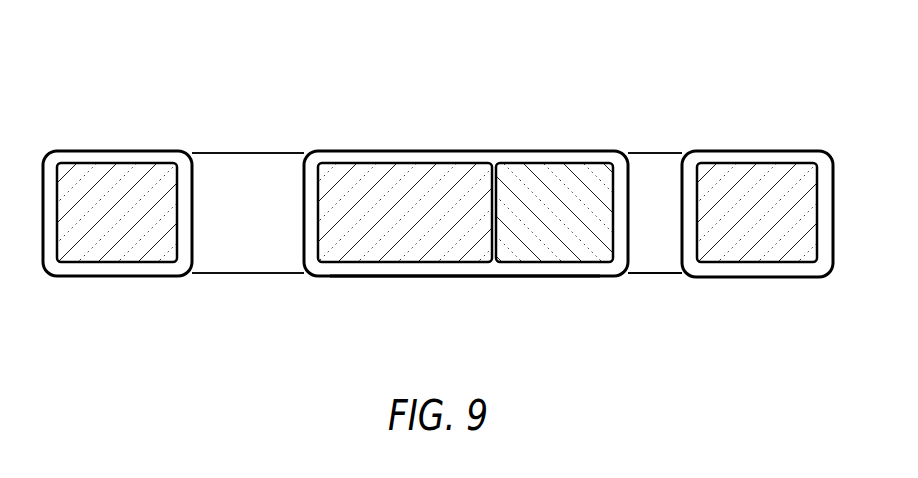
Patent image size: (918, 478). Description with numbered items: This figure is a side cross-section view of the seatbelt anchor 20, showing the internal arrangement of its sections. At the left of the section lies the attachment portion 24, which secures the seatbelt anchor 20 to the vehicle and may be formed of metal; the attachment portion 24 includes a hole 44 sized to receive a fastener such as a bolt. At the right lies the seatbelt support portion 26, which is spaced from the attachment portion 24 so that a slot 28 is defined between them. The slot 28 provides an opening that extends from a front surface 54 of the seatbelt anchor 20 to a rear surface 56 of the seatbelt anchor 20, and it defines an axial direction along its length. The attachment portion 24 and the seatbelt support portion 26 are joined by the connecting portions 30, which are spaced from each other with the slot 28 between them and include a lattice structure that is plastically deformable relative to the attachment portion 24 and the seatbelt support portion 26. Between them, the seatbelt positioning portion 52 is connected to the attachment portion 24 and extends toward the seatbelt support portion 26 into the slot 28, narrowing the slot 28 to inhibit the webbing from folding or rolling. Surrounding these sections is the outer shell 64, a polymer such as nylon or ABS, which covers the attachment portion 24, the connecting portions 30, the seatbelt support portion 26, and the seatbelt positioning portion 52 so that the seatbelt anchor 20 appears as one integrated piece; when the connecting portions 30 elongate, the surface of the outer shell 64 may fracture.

The seatbelt anchor 20 is at (125, 58).
The attachment portion 24 is at (117, 242).
The seatbelt support portion 26 is at (768, 242).
The slot 28 is at (658, 165).
The connecting portions 30 is at (645, 275).
The hole 44 is at (252, 175).
The seatbelt positioning portion 52 is at (548, 242).
The front surface 54 is at (343, 152).
The rear surface 56 is at (435, 276).
The outer shell 64 is at (173, 268).